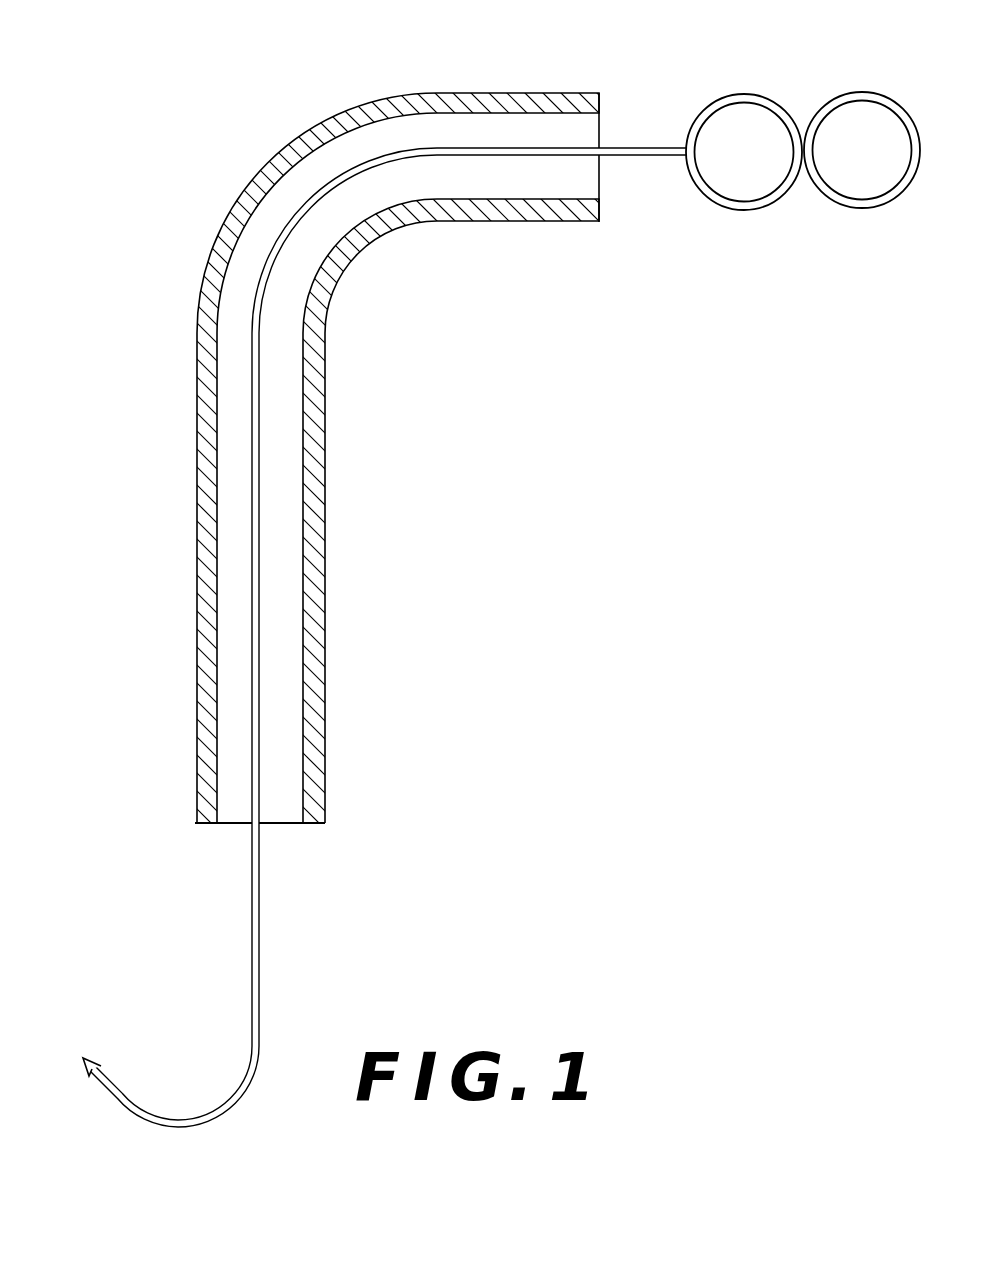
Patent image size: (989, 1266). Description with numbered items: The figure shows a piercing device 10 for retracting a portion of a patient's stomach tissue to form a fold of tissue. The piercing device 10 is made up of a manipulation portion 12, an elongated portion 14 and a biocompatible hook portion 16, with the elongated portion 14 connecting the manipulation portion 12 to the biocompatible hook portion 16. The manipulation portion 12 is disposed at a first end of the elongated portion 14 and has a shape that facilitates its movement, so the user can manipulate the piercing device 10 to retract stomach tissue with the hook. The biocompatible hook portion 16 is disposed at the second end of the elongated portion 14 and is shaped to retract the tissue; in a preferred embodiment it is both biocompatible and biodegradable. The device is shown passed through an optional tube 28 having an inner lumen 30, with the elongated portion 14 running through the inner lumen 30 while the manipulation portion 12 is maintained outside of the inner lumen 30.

The piercing device 10 is at (415, 62).
The manipulation portion 12 is at (781, 97).
The elongated portion 14 is at (252, 323).
The biocompatible hook portion 16 is at (86, 1080).
The tube 28 is at (535, 93).
The inner lumen 30 is at (592, 173).